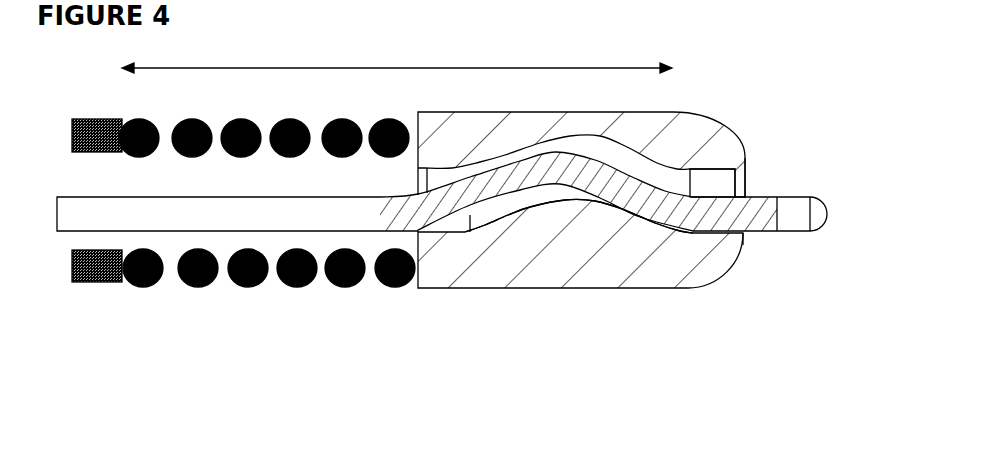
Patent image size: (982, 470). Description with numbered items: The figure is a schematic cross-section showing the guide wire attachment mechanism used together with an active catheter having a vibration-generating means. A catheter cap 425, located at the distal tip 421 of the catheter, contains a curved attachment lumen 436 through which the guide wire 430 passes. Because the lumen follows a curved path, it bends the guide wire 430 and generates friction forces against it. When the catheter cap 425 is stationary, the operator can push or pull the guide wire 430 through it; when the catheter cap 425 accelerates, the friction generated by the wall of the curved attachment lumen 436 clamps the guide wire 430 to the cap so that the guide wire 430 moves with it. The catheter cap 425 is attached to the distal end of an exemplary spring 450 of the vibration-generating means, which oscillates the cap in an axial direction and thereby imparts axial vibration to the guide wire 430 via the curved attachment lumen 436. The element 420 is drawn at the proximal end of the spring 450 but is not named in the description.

The end cap / anchor block 420 is at (94, 275).
The distal tip 421 is at (742, 258).
The catheter cap 425 is at (633, 258).
The guide wire 430 is at (179, 213).
The curved attachment lumen 436 is at (497, 219).
The spring 450 is at (347, 287).